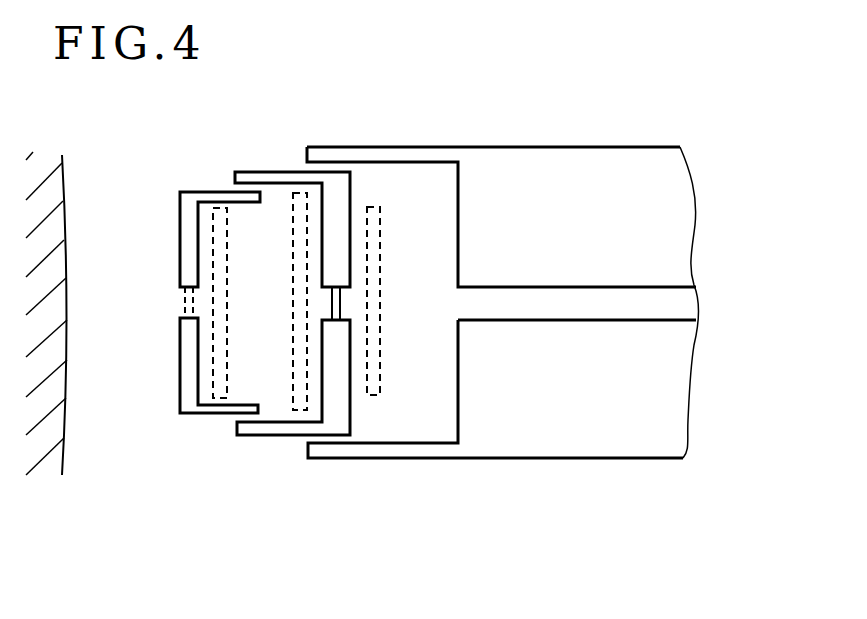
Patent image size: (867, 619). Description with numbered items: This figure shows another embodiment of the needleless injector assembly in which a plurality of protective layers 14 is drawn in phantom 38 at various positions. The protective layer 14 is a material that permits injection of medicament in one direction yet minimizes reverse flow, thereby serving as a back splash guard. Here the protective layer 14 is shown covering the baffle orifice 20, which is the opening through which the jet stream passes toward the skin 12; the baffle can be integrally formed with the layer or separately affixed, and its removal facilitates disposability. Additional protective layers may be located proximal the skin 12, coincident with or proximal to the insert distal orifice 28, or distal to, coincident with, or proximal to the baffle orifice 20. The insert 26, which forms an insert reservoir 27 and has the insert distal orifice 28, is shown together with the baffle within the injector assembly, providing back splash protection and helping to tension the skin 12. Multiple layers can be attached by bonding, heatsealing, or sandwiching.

The skin 12 is at (66, 423).
The protective layer 14 is at (340, 300).
The baffle orifice 20 is at (327, 302).
The insert 26 is at (182, 413).
The insert reservoir 27 is at (237, 373).
The insert distal orifice 28 is at (180, 300).
The phantom 38 is at (292, 228).